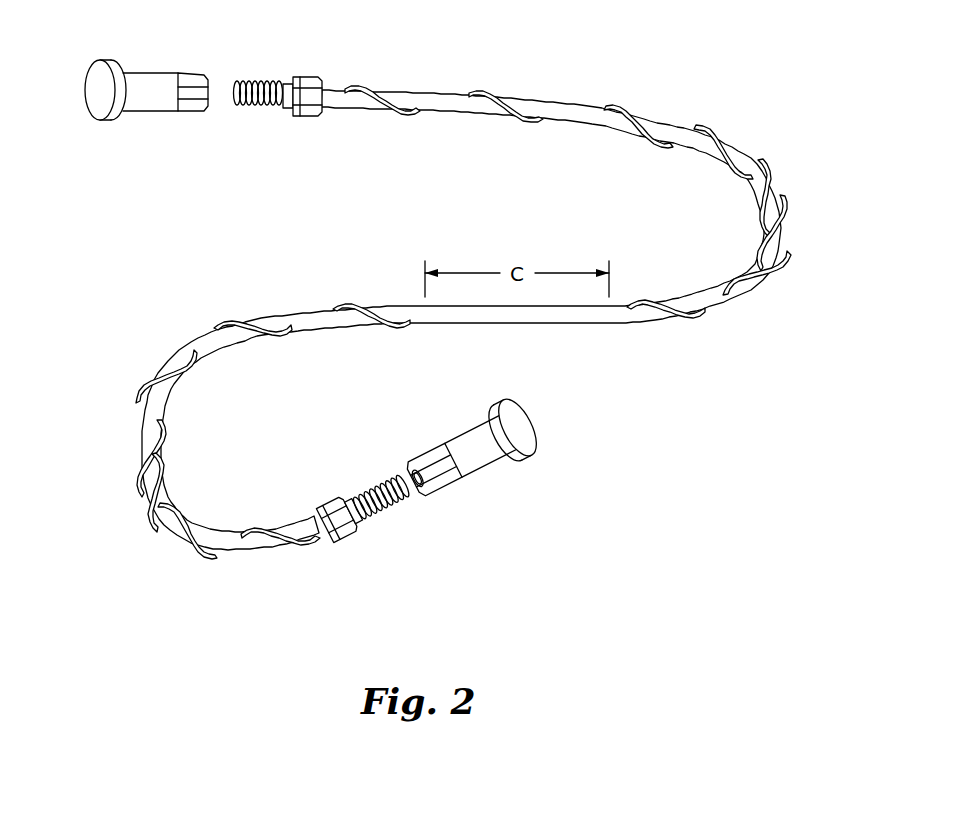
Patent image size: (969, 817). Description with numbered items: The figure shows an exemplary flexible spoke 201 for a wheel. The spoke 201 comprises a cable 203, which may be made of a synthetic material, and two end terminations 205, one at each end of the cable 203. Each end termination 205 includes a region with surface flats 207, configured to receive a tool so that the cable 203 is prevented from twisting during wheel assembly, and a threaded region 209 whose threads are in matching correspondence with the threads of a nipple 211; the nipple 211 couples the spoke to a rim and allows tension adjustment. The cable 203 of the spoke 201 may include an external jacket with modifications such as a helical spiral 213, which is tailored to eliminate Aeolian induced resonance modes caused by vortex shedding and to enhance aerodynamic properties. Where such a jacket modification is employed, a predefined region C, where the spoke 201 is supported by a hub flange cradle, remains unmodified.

The flexible spoke 201 is at (463, 289).
The cable 203 is at (487, 118).
The end termination 205 is at (317, 311).
The surface flats 207 is at (306, 80).
The threaded region 209 is at (250, 82).
The nipple 211 is at (147, 112).
The helical spiral 213 is at (226, 330).